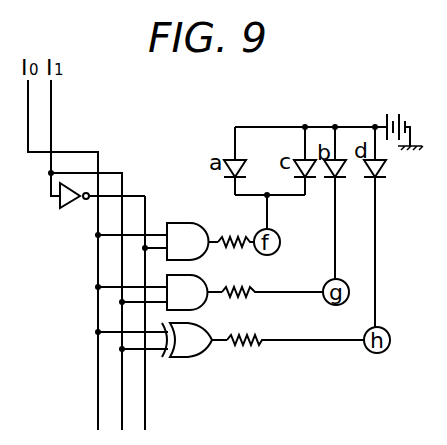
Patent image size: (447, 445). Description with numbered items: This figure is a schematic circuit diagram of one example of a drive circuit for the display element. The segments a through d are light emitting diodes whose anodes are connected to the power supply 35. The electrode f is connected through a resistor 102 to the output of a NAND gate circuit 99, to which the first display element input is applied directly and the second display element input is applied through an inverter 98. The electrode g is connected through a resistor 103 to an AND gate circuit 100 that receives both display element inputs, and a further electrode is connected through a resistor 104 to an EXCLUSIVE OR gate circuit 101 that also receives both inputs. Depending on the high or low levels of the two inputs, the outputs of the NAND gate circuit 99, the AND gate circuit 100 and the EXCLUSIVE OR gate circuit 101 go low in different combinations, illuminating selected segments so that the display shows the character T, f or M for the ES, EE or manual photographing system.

The power supply 35 is at (388, 112).
The inverter 98 is at (72, 206).
The NAND gate circuit 99 is at (190, 224).
The AND gate circuit 100 is at (198, 306).
The EXCLUSIVE OR gate circuit 101 is at (195, 360).
The resistor 102 is at (234, 230).
The resistor 103 is at (272, 281).
The resistor 104 is at (293, 354).